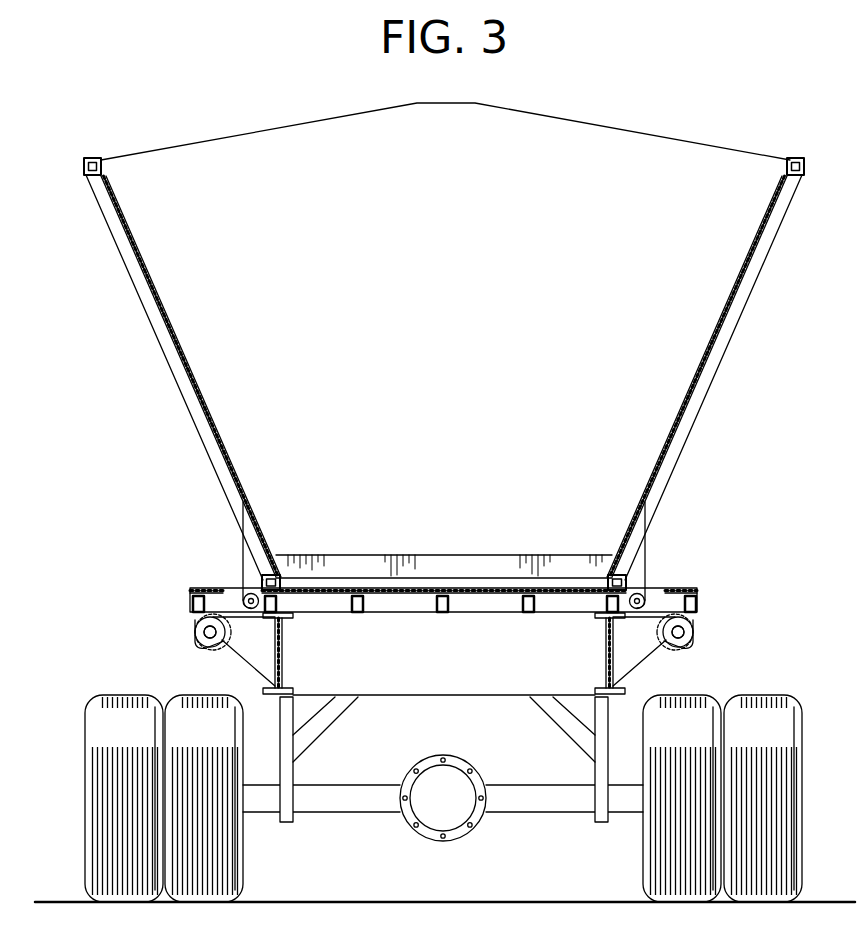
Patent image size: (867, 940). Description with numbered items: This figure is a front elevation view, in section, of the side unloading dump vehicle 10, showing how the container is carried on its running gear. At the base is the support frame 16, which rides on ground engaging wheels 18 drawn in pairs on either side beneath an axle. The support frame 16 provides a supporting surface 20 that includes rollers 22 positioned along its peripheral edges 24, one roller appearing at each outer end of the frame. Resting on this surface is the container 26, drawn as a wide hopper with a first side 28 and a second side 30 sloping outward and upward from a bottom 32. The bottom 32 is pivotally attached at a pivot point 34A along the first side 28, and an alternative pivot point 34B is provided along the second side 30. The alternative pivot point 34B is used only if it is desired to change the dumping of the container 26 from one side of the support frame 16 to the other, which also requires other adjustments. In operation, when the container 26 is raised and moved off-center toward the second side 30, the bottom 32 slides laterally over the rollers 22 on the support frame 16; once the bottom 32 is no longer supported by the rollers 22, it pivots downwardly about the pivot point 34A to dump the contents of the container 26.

The side unloading dump vehicle 10 is at (174, 112).
The support frame 16 is at (283, 657).
The ground engaging wheels 18 is at (85, 745).
The supporting surface 20 is at (292, 603).
The rollers 22 is at (193, 627).
The peripheral edges 24 is at (198, 641).
The container 26 is at (656, 134).
The first side 28 is at (150, 316).
The second side 30 is at (733, 340).
The bottom 32 is at (680, 589).
The pivot point 34A is at (247, 594).
The alternative pivot point 34B is at (641, 594).